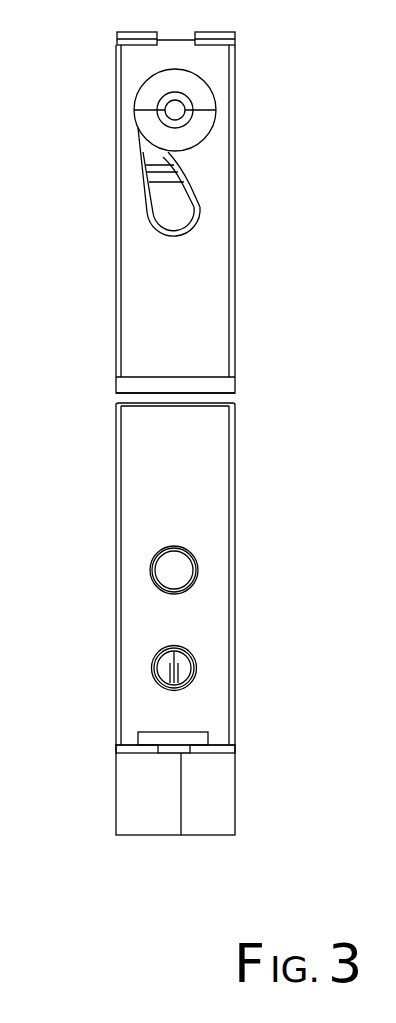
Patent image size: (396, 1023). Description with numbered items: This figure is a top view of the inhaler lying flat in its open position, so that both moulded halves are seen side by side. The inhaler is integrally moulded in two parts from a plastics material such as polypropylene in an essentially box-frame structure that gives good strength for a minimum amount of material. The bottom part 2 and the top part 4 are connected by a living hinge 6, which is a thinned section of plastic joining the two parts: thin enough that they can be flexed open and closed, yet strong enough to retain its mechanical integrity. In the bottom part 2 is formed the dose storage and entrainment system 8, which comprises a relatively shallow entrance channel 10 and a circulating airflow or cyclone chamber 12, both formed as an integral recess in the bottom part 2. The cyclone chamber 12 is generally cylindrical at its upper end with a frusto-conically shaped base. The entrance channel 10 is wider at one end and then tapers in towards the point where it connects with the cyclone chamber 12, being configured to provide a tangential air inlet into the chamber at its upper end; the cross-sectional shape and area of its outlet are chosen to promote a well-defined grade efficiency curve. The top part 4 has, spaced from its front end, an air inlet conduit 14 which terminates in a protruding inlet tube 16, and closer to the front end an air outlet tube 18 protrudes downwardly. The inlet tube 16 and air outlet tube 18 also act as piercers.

The bottom part 2 is at (215, 327).
The top part 4 is at (205, 473).
The living hinge 6 is at (203, 394).
The dose storage and entrainment system 8 is at (159, 166).
The entrance channel 10 is at (182, 210).
The cyclone chamber 12 is at (200, 107).
The air inlet conduit 14 is at (184, 570).
The inlet tube 16 is at (198, 563).
The air outlet tube 18 is at (197, 665).